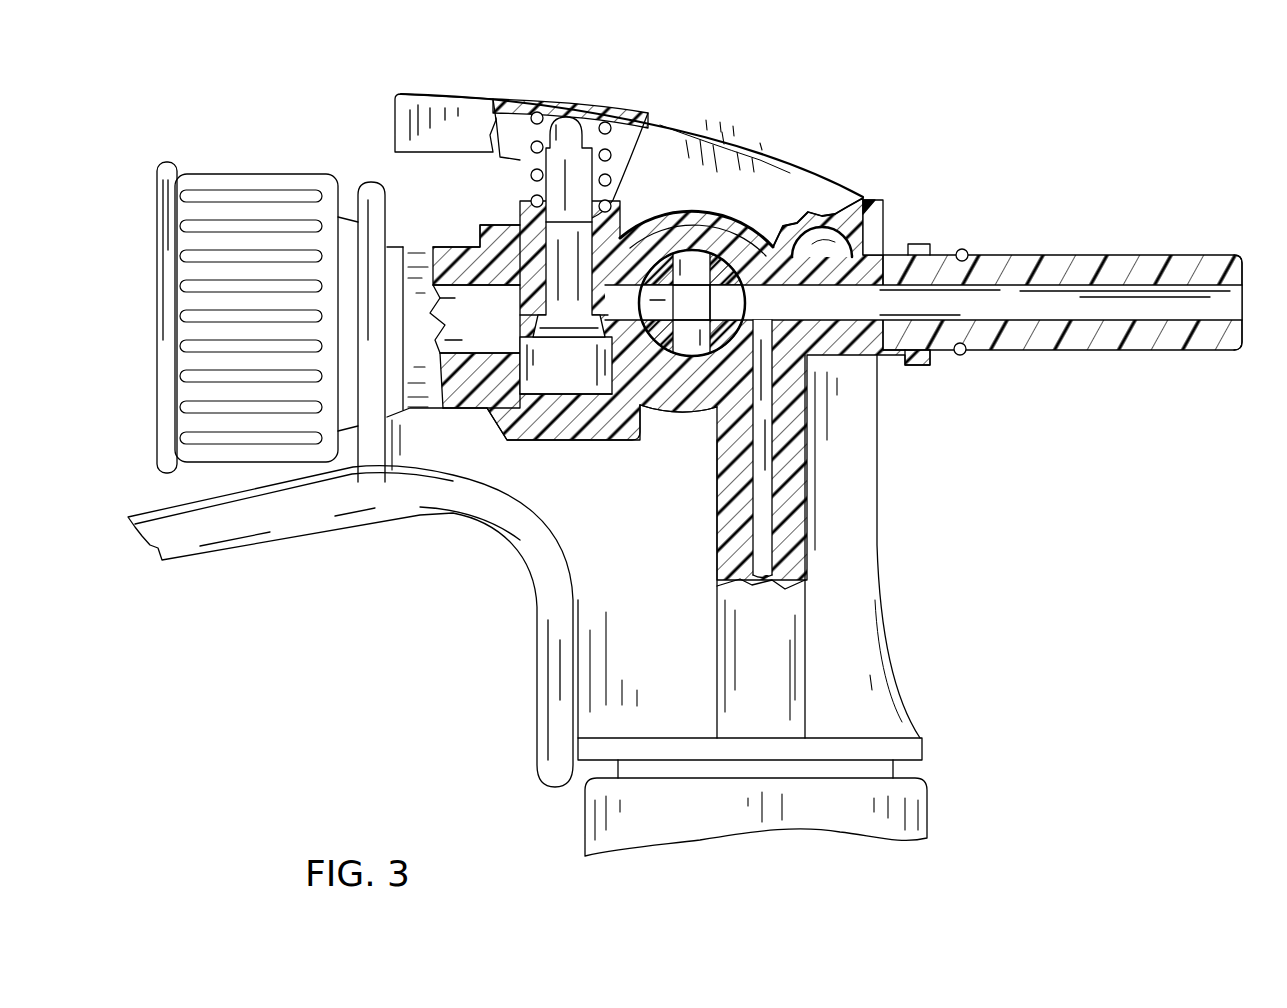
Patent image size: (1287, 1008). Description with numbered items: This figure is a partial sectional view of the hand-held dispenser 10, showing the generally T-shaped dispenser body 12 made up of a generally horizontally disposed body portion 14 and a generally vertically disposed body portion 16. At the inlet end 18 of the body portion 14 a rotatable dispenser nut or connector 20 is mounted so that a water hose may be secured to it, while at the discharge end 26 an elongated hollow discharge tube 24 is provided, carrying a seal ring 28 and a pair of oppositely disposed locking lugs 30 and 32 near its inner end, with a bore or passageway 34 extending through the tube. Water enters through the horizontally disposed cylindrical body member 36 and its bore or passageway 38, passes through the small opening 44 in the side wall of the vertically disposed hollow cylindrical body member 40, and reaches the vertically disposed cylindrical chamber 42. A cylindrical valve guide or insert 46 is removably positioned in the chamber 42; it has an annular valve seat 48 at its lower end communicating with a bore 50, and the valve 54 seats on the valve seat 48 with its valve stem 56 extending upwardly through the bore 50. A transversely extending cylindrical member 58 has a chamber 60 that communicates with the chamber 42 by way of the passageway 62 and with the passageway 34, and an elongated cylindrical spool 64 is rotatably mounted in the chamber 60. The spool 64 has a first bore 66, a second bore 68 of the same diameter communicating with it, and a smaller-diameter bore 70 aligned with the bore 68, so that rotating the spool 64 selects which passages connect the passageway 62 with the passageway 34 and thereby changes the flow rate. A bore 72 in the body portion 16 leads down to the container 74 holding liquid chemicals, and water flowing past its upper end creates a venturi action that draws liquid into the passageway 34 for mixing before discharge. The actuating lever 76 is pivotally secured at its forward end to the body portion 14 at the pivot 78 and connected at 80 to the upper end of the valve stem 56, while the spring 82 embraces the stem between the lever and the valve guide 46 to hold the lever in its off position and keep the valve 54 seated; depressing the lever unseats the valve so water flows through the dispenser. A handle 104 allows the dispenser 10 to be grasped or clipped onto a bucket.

The dispenser 10 is at (858, 118).
The dispenser body 12 is at (885, 185).
The horizontally disposed body portion 14 is at (873, 233).
The vertically disposed body portion 16 is at (842, 653).
The inlet end 18 is at (385, 170).
The rotatable dispenser nut or connector 20 is at (290, 178).
The elongated hollow discharge tube 24 is at (1092, 255).
The discharge end 26 is at (1255, 270).
The seal ring 28 is at (964, 352).
The locking lug 30 is at (913, 246).
The locking lug 32 is at (915, 365).
The bore or passageway 34 is at (1207, 305).
The horizontally disposed cylindrical body member 36 is at (460, 247).
The bore or passageway 38 is at (448, 320).
The vertically disposed hollow cylindrical body member 40 is at (602, 405).
The vertically disposed cylindrical chamber or passageway 42 is at (510, 412).
The small opening 44 is at (470, 398).
The cylindrical valve guide or insert 46 is at (655, 140).
The annular valve seat 48 is at (642, 405).
The bore 50 is at (668, 165).
The valve 54 is at (572, 340).
The valve stem 56 is at (565, 268).
The transversely extending cylindrical member 58 is at (708, 408).
The chamber 60 is at (718, 397).
The passageway 62 is at (707, 197).
The elongated cylindrical spool 64 is at (840, 233).
The first passageway or bore 66 is at (688, 350).
The second passageway or bore 68 is at (743, 220).
The bore or passageway 70 is at (738, 303).
The bore 72 is at (762, 540).
The container 74 is at (898, 812).
The actuating lever 76 is at (465, 93).
The pivot 78 is at (880, 200).
The connection 80 is at (587, 140).
The spring 82 is at (527, 140).
The handle 104 is at (293, 525).